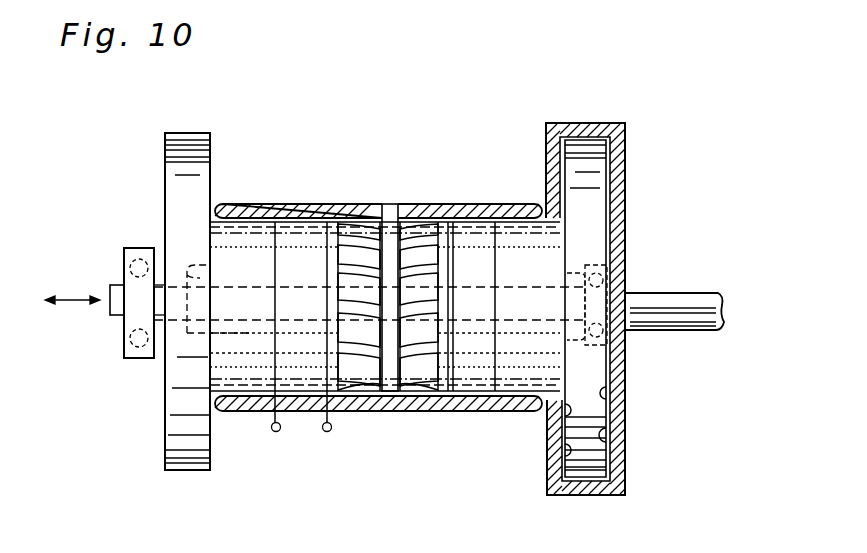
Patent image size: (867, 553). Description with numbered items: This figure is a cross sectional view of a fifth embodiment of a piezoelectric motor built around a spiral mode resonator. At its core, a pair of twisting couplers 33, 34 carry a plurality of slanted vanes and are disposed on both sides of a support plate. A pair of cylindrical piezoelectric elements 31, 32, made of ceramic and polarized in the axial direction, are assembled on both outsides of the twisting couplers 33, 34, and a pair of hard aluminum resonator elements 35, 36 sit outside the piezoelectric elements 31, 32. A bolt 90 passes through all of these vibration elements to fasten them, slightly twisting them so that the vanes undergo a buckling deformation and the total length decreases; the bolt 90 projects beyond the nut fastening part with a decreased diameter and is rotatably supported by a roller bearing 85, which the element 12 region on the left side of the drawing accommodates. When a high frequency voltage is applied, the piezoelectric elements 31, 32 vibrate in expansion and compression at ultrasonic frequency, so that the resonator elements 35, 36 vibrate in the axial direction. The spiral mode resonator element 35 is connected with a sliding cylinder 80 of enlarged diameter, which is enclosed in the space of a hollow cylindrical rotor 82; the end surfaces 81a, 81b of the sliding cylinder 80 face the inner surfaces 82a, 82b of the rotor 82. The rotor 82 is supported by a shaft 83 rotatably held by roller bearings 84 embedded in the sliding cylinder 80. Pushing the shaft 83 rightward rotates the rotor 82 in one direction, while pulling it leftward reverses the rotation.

The bearing block 12 is at (139, 248).
The roller bearing 85 is at (128, 270).
The bolt 90 is at (250, 303).
The resonator element 36 is at (238, 245).
The piezoelectric element 32 is at (296, 235).
The twisting coupler 34 is at (355, 237).
The twisting coupler 33 is at (412, 237).
The piezoelectric element 31 is at (462, 214).
The spiral mode resonator element 35 is at (520, 245).
The hollow cylindrical rotor 82 is at (622, 210).
The sliding cylinder 80 is at (592, 178).
The roller bearings 84 is at (628, 268).
The shaft 83 is at (722, 322).
The inner surface 82a is at (605, 393).
The end surface 81a is at (605, 435).
The inner surface 82b is at (570, 407).
The end surface 81b is at (565, 466).